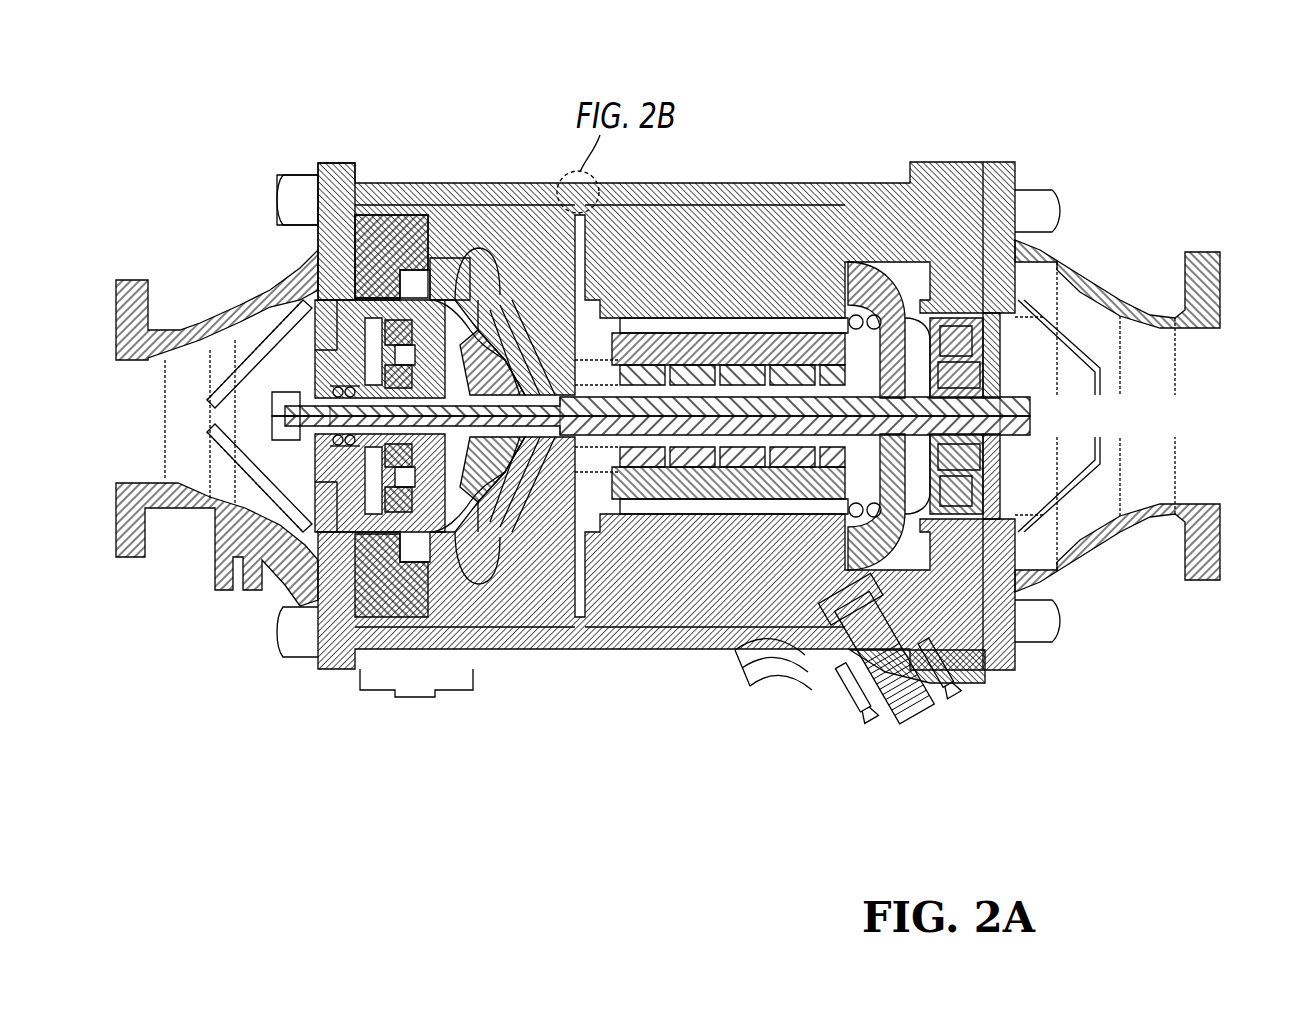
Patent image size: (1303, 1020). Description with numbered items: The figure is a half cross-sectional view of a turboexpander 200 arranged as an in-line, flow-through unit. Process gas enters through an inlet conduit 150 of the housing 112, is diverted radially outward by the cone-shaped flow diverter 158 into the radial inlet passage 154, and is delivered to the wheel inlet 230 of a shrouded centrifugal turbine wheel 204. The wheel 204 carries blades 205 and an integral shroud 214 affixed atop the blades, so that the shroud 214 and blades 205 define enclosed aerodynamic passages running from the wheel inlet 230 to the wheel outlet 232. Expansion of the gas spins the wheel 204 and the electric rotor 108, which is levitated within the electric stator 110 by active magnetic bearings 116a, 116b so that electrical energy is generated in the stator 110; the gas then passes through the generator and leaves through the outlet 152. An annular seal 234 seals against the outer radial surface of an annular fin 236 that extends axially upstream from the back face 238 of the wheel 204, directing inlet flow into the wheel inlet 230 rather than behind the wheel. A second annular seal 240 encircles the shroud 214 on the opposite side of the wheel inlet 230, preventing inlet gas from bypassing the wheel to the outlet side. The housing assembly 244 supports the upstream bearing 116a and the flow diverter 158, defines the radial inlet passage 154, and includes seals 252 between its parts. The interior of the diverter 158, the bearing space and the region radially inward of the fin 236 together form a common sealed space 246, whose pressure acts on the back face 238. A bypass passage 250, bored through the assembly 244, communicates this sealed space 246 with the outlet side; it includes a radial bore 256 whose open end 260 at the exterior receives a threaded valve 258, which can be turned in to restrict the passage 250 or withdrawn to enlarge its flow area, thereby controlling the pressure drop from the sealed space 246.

The turboexpander 200 is at (170, 162).
The electric rotor 108 is at (905, 455).
The electric stator 110 is at (765, 350).
The turboexpander housing 112 is at (640, 225).
The upstream active magnetic bearing 116a is at (362, 580).
The downstream active magnetic bearing 116b is at (962, 562).
The inlet conduit 150 is at (185, 422).
The outlet 152 is at (1210, 418).
The radial inlet passage 154 is at (470, 300).
The flow diverter 158 is at (275, 335).
The turbine wheel 204 is at (415, 655).
The blades 205 is at (540, 540).
The shroud 214 is at (490, 540).
The wheel inlet 230 is at (520, 230).
The wheel outlet 232 is at (565, 200).
The annular seal 234 is at (448, 560).
The annular fin 236 is at (412, 525).
The back face 238 is at (400, 520).
The second annular seal 240 is at (502, 545).
The housing assembly 244 is at (340, 180).
The sealed space 246 is at (265, 375).
The bypass passage 250 is at (395, 240).
The seals 252 is at (335, 222).
The radial bore 256 is at (605, 220).
The valve 258 is at (578, 203).
The open end 260 is at (590, 212).